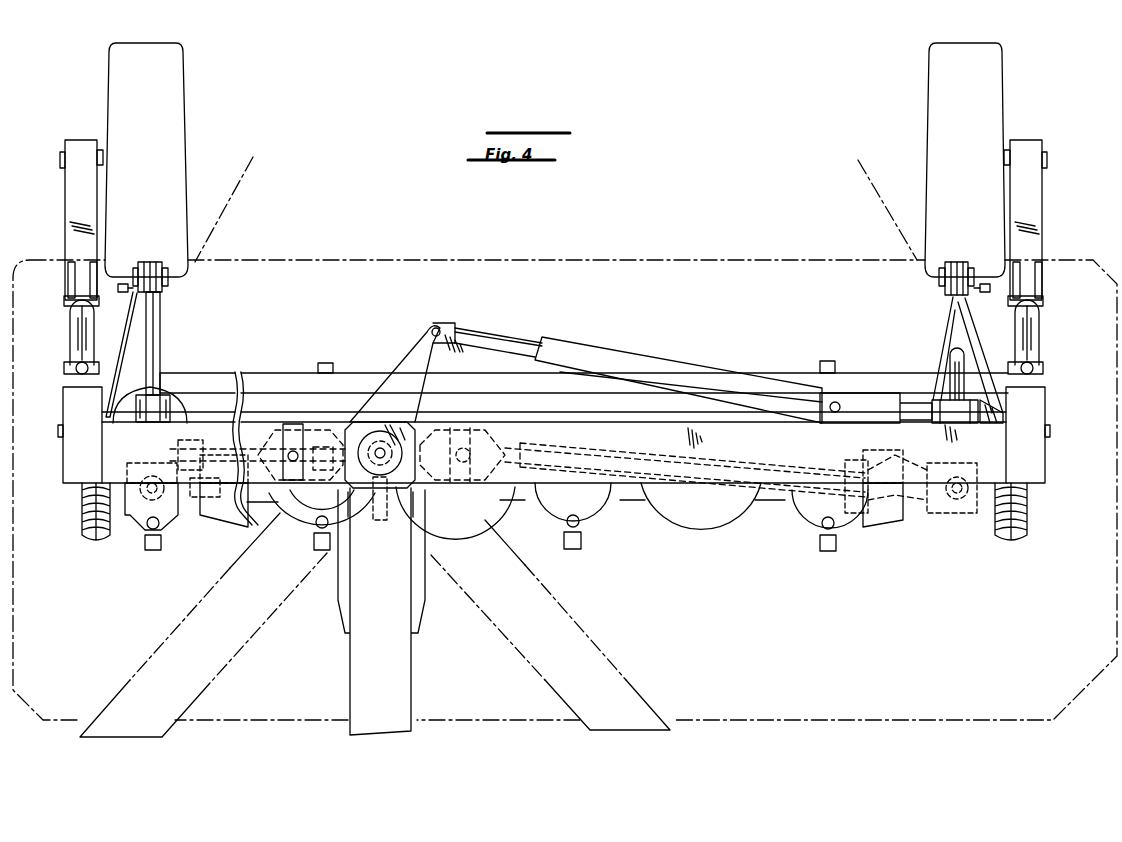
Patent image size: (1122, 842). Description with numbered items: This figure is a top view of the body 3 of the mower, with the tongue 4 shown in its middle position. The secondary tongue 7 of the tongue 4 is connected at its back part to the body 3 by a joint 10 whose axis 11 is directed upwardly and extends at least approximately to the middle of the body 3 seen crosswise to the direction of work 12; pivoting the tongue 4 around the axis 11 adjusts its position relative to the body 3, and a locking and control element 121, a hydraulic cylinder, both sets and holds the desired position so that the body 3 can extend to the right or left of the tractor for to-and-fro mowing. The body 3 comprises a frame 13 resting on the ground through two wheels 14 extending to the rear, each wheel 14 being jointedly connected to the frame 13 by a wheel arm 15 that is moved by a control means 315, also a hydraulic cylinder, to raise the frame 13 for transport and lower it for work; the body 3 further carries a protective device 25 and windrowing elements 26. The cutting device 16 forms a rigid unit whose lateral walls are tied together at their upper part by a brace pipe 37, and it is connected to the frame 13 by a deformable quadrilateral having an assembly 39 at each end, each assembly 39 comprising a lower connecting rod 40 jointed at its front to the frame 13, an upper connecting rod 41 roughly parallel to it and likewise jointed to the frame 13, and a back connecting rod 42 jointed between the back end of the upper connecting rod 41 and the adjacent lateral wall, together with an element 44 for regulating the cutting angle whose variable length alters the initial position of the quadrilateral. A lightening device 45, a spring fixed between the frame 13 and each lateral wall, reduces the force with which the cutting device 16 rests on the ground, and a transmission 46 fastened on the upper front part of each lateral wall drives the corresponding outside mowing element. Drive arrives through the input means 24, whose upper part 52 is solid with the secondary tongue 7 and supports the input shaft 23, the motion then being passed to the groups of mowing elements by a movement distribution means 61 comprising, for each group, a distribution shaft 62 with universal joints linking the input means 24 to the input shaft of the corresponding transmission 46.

The body 3 is at (705, 570).
The tongue 4 is at (342, 671).
The secondary tongue 7 is at (403, 658).
The joint 10 is at (412, 477).
The axis 11 is at (383, 452).
The direction of work 12 is at (857, 637).
The frame 13 is at (253, 435).
The wheels 14 is at (172, 80).
The wheel arm 15 is at (78, 193).
The cutting device 16 is at (611, 515).
The input shaft 23 is at (382, 520).
The input means 24 is at (368, 425).
The protective device 25 is at (625, 258).
The windrowing elements 26 is at (262, 166).
The brace pipe 37 is at (880, 385).
The assembly 39 is at (174, 306).
The lower connecting rod 40 is at (105, 400).
The upper connecting rod 41 is at (155, 368).
The back connecting rod 42 is at (162, 262).
The element for regulating the cutting angle 44 is at (143, 332).
The lightening device 45 is at (82, 507).
The transmission 46 is at (135, 515).
The upper part 52 is at (410, 440).
The movement distribution means 61 is at (222, 528).
The distribution shaft 62 is at (232, 467).
The locking and control element 121 is at (630, 358).
The control means 315 is at (80, 334).